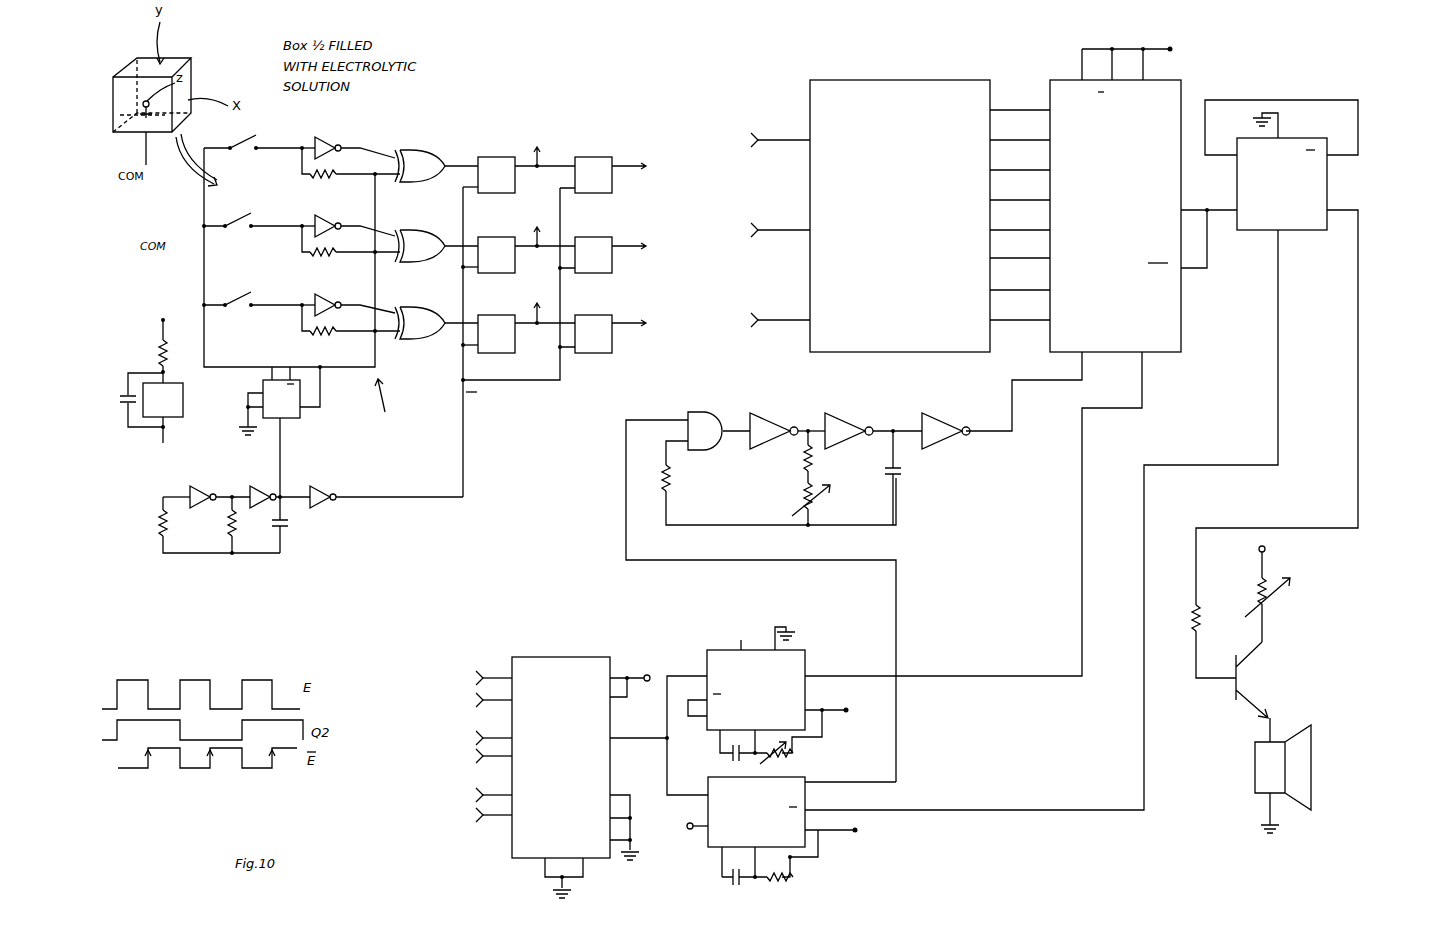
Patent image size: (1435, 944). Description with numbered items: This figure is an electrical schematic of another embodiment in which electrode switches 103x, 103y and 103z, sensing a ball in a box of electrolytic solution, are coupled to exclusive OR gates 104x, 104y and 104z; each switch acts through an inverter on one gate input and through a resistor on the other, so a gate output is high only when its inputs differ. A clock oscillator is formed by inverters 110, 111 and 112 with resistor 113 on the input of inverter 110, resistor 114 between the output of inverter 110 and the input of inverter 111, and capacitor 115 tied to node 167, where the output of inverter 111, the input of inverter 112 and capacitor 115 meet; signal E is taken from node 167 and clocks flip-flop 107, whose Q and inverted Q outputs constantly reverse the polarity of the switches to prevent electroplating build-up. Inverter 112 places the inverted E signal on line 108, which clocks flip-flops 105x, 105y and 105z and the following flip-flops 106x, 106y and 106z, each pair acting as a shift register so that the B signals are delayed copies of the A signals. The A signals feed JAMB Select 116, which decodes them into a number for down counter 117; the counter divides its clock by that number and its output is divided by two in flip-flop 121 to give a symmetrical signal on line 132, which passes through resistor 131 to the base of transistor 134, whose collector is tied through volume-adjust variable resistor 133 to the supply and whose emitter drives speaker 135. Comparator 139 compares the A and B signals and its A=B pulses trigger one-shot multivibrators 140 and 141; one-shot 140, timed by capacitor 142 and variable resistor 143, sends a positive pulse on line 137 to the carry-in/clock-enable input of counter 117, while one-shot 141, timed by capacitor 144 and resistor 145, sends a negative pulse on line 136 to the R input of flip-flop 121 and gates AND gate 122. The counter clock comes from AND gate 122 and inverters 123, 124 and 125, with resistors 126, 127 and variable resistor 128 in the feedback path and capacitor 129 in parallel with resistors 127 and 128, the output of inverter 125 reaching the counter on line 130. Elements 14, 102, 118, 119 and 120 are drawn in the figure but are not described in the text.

The power supply filter 14 is at (147, 373).
The flip-flop 102 is at (298, 416).
The switch 103x is at (253, 153).
The switch 103y is at (253, 231).
The switch 103z is at (253, 311).
The exclusive OR gate 104x is at (416, 152).
The exclusive OR gate 104y is at (416, 234).
The exclusive OR gate 104z is at (416, 312).
The flip-flop 105x is at (496, 156).
The flip-flop 105y is at (500, 237).
The flip-flop 105z is at (500, 315).
The flip-flop 106x is at (596, 157).
The flip-flop 106y is at (596, 237).
The flip-flop 106z is at (596, 315).
The flip-flop 107 is at (377, 358).
The line 108 is at (463, 481).
The inverter 110 is at (200, 495).
The inverter 111 is at (262, 493).
The inverter 112 is at (316, 495).
The resistor 113 is at (160, 542).
The resistor 114 is at (235, 530).
The capacitor 115 is at (283, 530).
The JAMB Select 116 is at (908, 72).
The down counter 117 is at (1163, 111).
The input C 118 is at (776, 140).
The input B 119 is at (780, 230).
The input A 120 is at (782, 320).
The flip-flop 121 is at (1315, 189).
The AND gate 122 is at (702, 413).
The inverter 123 is at (770, 412).
The inverter 124 is at (845, 412).
The inverter 125 is at (944, 415).
The resistor 126 is at (668, 497).
The resistor 127 is at (812, 463).
The variable resistor 128 is at (818, 511).
The capacitor 129 is at (898, 478).
The line 130 is at (1012, 440).
The resistor 131 is at (1194, 609).
The line 132 is at (1359, 302).
The variable resistor 133 is at (1268, 613).
The transistor 134 is at (1240, 692).
The speaker 135 is at (1312, 790).
The line 136 is at (1279, 295).
The line 137 is at (1084, 450).
The comparator 139 is at (563, 657).
The one-shot multivibrator 140 is at (727, 650).
The one-shot multivibrator 141 is at (708, 844).
The capacitor 142 is at (721, 758).
The variable resistor 143 is at (786, 758).
The capacitor 144 is at (734, 886).
The resistor 145 is at (784, 884).
The node 167 is at (282, 496).